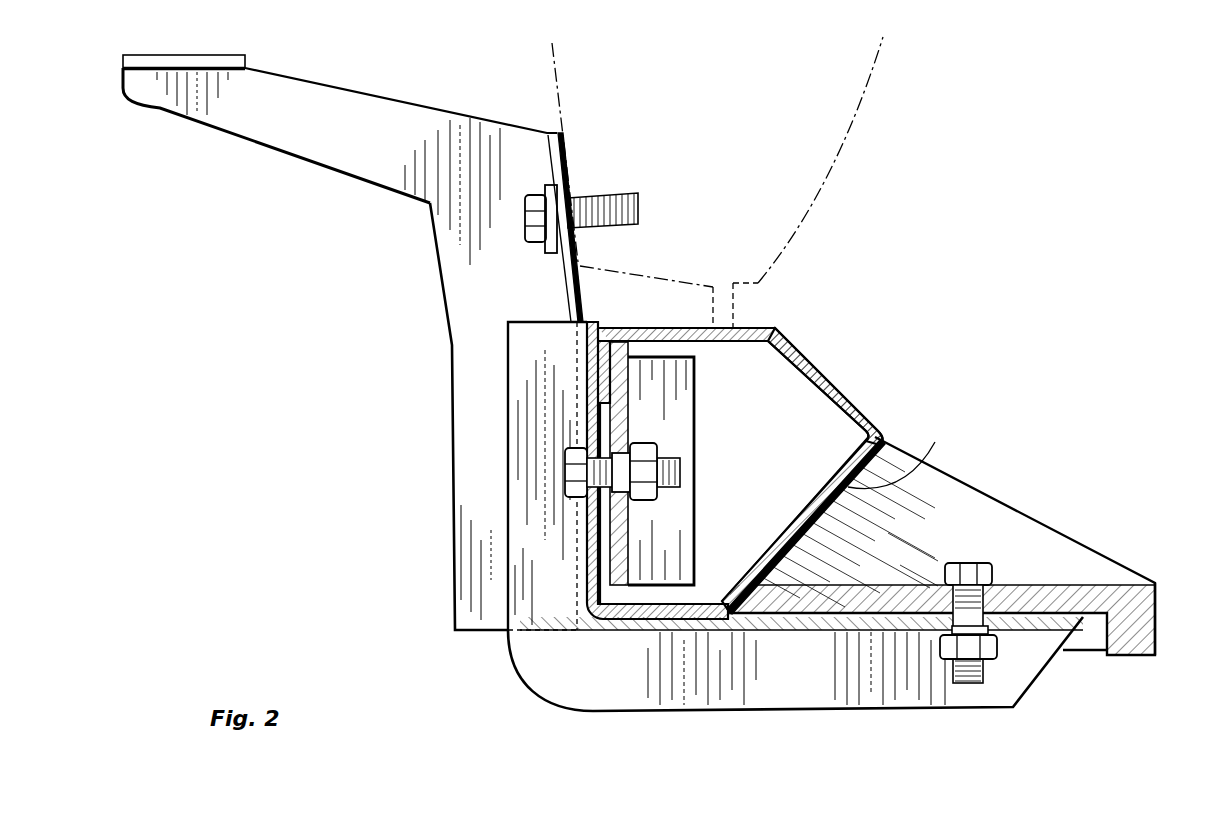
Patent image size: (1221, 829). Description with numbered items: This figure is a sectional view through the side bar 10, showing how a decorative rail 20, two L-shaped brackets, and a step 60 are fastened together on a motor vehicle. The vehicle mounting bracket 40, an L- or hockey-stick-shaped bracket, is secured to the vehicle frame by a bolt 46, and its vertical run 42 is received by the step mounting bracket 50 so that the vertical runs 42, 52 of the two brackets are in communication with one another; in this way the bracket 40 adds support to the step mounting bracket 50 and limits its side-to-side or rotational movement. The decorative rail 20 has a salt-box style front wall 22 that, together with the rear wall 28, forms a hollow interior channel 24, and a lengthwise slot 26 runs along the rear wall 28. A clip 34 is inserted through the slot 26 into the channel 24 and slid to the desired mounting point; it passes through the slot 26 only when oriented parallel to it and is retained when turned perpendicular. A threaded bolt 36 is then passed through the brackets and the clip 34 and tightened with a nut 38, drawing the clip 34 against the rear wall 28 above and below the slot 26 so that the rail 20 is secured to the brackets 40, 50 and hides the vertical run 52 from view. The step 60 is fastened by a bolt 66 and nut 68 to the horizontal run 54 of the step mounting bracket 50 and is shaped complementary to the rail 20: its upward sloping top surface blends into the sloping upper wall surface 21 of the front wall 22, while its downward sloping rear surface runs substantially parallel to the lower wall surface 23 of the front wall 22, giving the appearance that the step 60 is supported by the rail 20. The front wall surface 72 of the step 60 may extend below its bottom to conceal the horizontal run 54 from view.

The side bar 10 is at (960, 333).
The decorative rail 20 is at (790, 328).
The sloping upper wall surface 21 is at (818, 367).
The front wall 22 is at (890, 430).
The lower wall surface 23 is at (887, 483).
The channel 24 is at (775, 450).
The slot 26 is at (607, 515).
The rear wall 28 is at (636, 336).
The clip 34 is at (697, 417).
The threaded bolt 36 is at (577, 473).
The nut 38 is at (653, 497).
The vehicle mounting bracket 40 is at (413, 240).
The vertical run 42 is at (463, 375).
The bolt 46 is at (537, 226).
The step mounting bracket 50 is at (640, 718).
The vertical run 52 is at (540, 415).
The horizontal run 54 is at (750, 688).
The step 60 is at (985, 487).
The bolt 66 is at (975, 573).
The nut 68 is at (990, 648).
The front wall surface 72 is at (1158, 620).